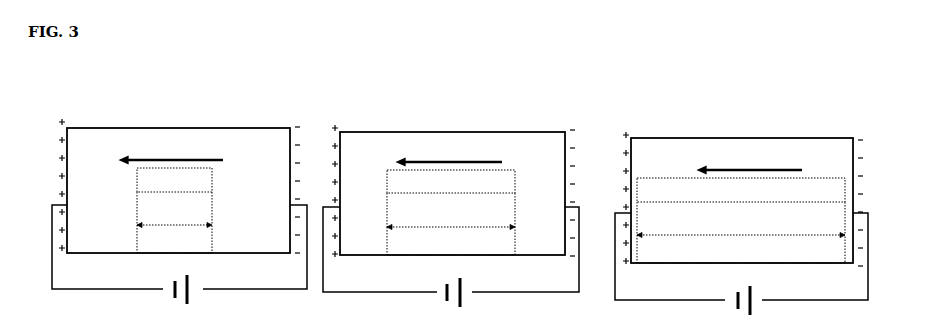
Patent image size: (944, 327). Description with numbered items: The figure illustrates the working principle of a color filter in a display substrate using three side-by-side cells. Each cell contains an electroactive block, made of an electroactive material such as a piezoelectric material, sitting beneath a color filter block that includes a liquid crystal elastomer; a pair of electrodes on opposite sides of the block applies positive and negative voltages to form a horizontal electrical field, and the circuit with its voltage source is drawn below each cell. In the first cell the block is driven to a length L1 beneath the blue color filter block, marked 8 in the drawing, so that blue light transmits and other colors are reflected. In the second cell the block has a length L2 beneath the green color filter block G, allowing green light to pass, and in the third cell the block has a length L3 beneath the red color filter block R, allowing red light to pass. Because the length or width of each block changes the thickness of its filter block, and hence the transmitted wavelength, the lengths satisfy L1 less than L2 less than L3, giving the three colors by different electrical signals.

The blue film layer 8 is at (174, 180).
The green color filter block G is at (451, 181).
The red color filter block R is at (741, 190).
The length L1 is at (174, 210).
The length L2 is at (451, 211).
The length L3 is at (741, 220).